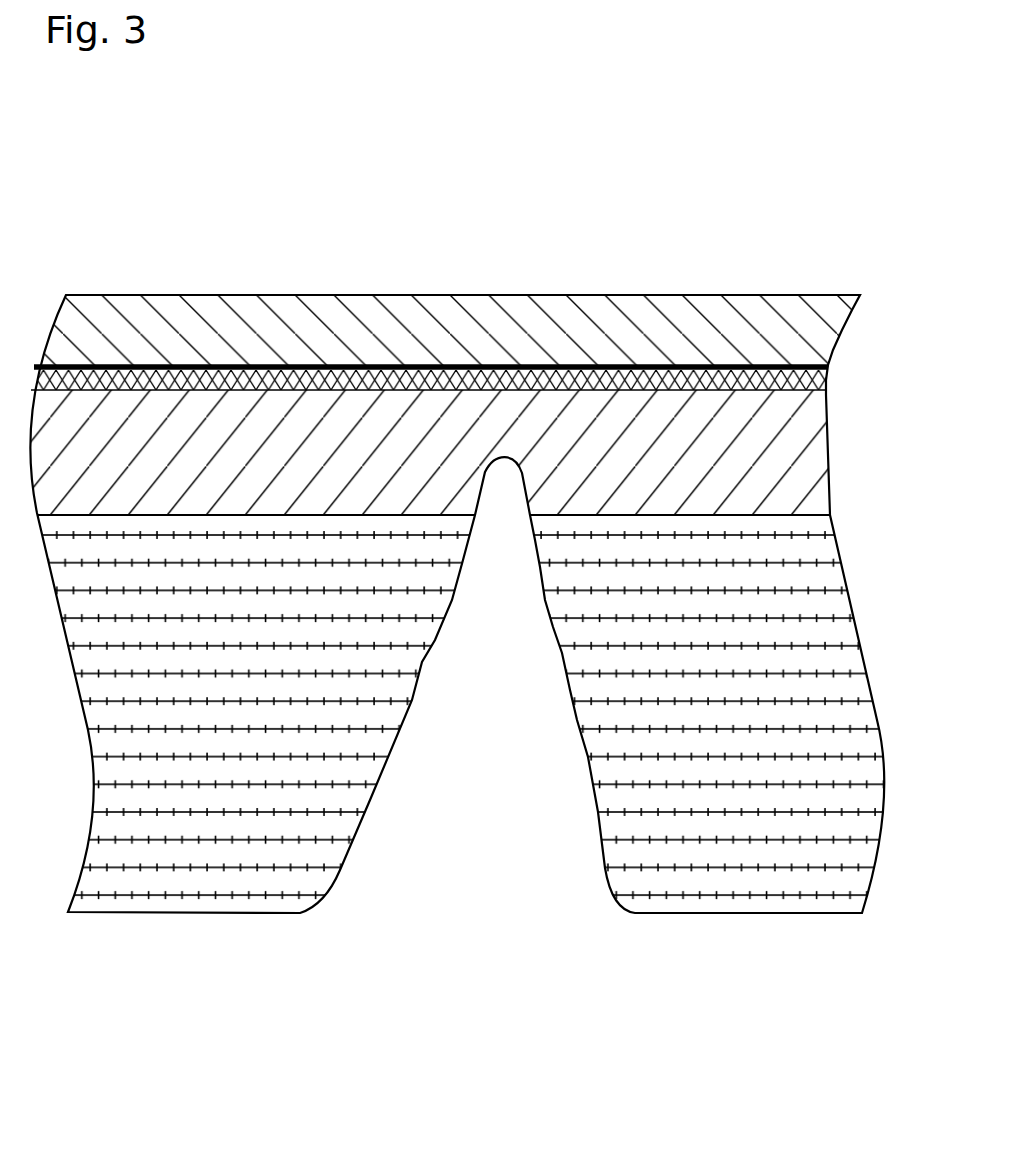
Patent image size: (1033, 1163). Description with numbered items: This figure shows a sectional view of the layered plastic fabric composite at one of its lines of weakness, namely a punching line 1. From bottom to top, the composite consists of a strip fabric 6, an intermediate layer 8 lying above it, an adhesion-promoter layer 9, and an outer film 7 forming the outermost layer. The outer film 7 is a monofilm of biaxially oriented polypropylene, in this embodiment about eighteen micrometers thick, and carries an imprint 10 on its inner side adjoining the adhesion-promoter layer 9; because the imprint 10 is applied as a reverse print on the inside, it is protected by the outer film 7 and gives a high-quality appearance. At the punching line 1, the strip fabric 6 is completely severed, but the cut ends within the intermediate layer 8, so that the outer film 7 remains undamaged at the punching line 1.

The punching line 1 is at (482, 820).
The strip fabric 6 is at (101, 798).
The outer film 7 is at (825, 327).
The intermediate layer 8 is at (818, 498).
The adhesion-promoter layer 9 is at (815, 382).
The imprint 10 is at (829, 367).